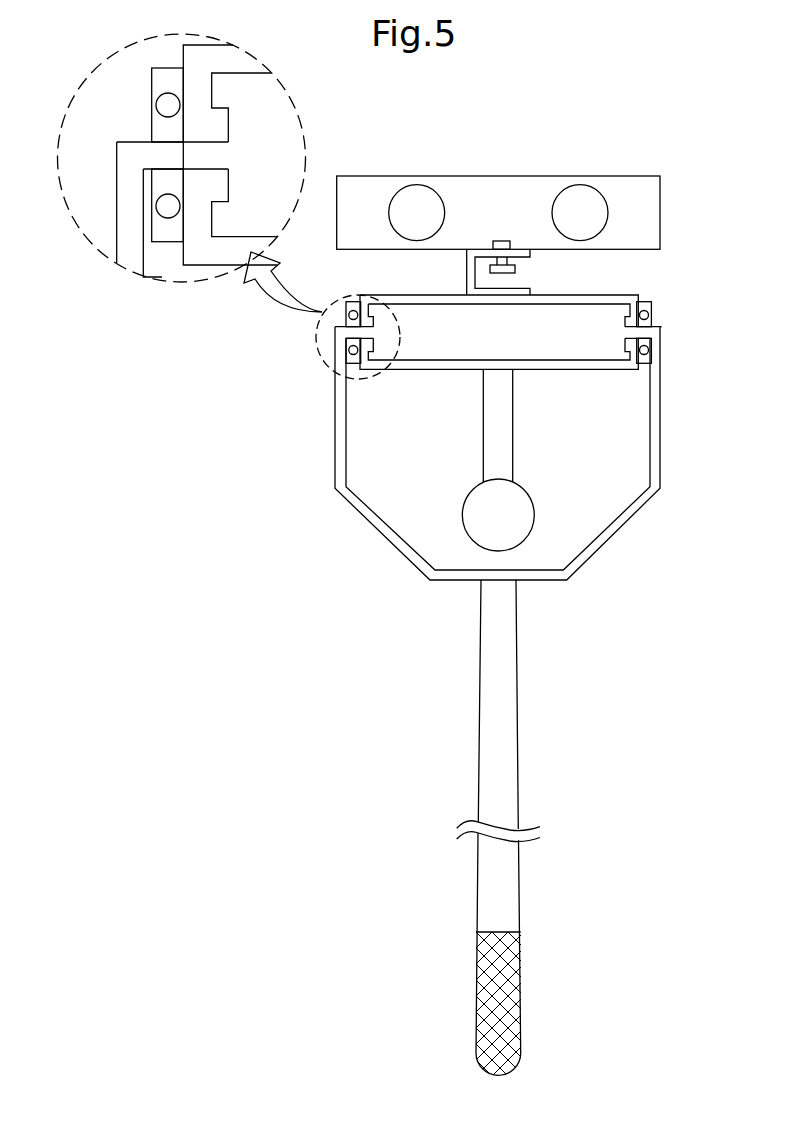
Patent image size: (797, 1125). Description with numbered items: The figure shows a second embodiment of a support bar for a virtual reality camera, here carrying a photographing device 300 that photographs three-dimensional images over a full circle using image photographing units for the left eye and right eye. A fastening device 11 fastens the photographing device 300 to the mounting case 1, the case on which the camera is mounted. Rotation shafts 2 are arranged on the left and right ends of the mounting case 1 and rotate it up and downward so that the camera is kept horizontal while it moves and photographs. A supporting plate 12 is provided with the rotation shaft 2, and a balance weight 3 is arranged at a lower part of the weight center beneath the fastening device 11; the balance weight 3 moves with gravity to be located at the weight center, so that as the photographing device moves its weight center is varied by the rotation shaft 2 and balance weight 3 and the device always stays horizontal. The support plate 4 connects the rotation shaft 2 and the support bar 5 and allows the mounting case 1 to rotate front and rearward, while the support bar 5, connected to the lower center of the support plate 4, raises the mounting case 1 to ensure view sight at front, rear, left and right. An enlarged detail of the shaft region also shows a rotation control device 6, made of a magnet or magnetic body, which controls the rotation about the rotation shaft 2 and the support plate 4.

The mounting case 1 is at (420, 363).
The rotation shaft 2 is at (353, 333).
The balance weight 3 is at (522, 518).
The support plate 4 is at (122, 213).
The support bar 5 is at (505, 725).
The rotation control device 6 is at (160, 75).
The fastening device 11 is at (517, 268).
The supporting plate 12 is at (598, 370).
The photographing device 300 is at (648, 218).